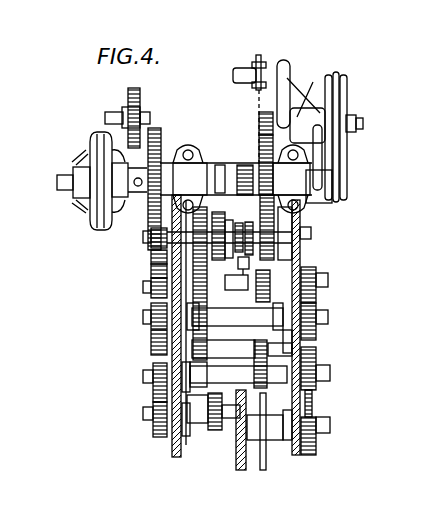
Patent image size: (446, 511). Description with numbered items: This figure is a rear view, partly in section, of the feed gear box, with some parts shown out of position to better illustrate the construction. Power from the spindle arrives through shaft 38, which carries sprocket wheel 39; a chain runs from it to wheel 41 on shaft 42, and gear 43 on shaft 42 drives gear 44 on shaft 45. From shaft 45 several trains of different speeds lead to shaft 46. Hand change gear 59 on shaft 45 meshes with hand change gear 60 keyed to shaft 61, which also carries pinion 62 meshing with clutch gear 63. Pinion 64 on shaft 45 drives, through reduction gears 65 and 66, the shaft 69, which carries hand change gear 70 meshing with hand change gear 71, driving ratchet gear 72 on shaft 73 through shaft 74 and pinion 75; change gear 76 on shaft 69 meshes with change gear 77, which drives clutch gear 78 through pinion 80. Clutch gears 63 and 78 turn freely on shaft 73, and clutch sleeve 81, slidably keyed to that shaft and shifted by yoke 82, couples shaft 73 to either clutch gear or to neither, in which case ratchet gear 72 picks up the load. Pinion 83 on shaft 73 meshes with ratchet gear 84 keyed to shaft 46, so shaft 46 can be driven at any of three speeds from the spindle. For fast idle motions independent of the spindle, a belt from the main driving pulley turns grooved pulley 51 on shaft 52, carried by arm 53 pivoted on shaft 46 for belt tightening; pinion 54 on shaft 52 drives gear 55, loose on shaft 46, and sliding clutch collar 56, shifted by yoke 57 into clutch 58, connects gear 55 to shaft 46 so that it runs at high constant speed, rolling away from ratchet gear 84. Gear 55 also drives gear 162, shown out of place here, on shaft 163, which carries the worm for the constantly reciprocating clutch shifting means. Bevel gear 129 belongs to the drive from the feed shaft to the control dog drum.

The gear 162 is at (128, 97).
The shaft 163 is at (105, 118).
The ratchet gear 84 is at (160, 130).
The clutch 58 is at (208, 163).
The sprocket wheel 39 is at (259, 57).
The shaft 38 is at (245, 68).
The pinion 54 is at (261, 118).
The gear 55 is at (259, 143).
The yoke 57 is at (256, 165).
The shaft 52 is at (301, 125).
The grooved pulley 51 is at (340, 88).
The arm 53 is at (363, 123).
The sliding clutch collar 56 is at (253, 184).
The clutch gear 63 is at (215, 213).
The clutch sleeve 81 is at (250, 219).
The yoke 82 is at (300, 225).
The clutch gear 78 is at (311, 233).
The shaft 73 is at (311, 245).
The change gear 77 is at (318, 270).
The change gear 76 is at (318, 332).
The gear 44 is at (318, 355).
The shaft 45 is at (330, 373).
The shaft 42 is at (330, 427).
The gear 43 is at (316, 448).
The wheel 41 is at (259, 442).
The pinion 75 is at (247, 286).
The pinion 80 is at (256, 298).
The reduction gear 65 is at (268, 342).
The pinion 64 is at (258, 372).
The reduction gear 66 is at (238, 364).
The pinion 62 is at (214, 430).
The shaft 61 is at (203, 423).
The pinion 83 is at (143, 237).
The ratchet gear 72 is at (195, 243).
The hand change gear 71 is at (151, 268).
The shaft 74 is at (143, 287).
The shaft 69 is at (143, 316).
The hand change gear 70 is at (152, 335).
The hand change gear 59 is at (153, 390).
The hand change gear 60 is at (152, 435).
The shaft 46 is at (97, 212).
The bevel gear 129 is at (72, 207).